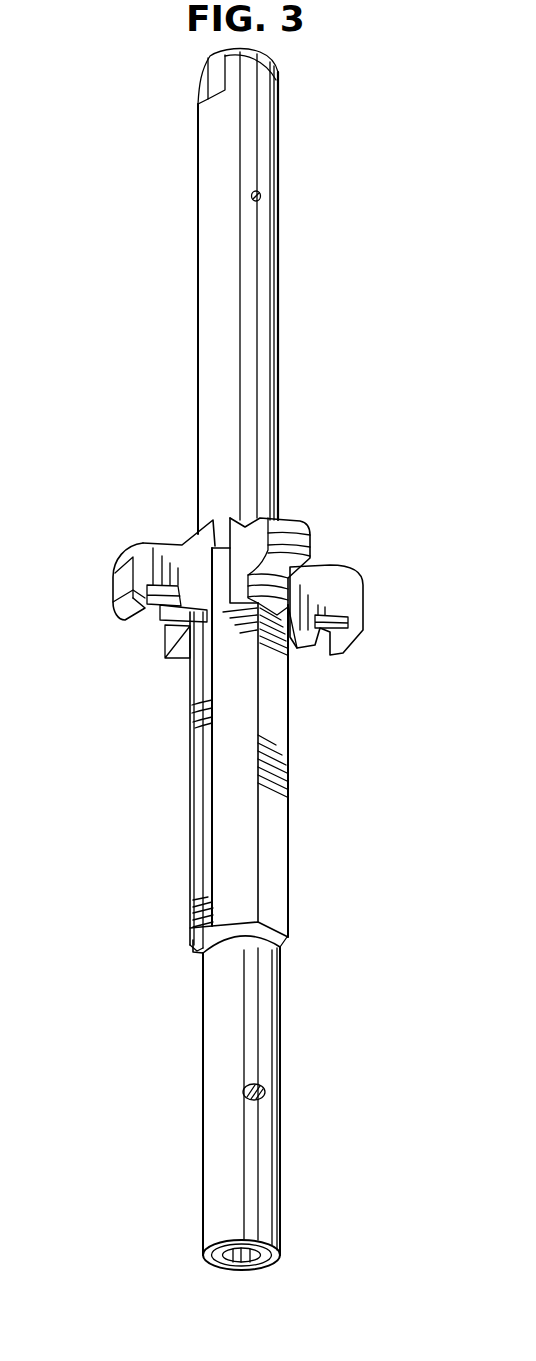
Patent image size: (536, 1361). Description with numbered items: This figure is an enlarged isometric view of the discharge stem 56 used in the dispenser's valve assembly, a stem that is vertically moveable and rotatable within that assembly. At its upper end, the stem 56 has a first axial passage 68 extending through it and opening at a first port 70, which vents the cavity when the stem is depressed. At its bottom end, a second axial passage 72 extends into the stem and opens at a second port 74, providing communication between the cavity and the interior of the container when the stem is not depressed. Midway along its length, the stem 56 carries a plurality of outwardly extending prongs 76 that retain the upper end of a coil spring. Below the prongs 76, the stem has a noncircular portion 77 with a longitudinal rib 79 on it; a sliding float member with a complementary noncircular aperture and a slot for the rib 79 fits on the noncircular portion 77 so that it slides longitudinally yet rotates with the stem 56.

The discharge stem 56 is at (278, 338).
The first axial passage 68 is at (205, 82).
The first port 70 is at (260, 194).
The second axial passage 72 is at (241, 1262).
The second port 74 is at (262, 1088).
The prongs 76 is at (147, 542).
The noncircular portion 77 is at (290, 825).
The longitudinal rib 79 is at (197, 815).